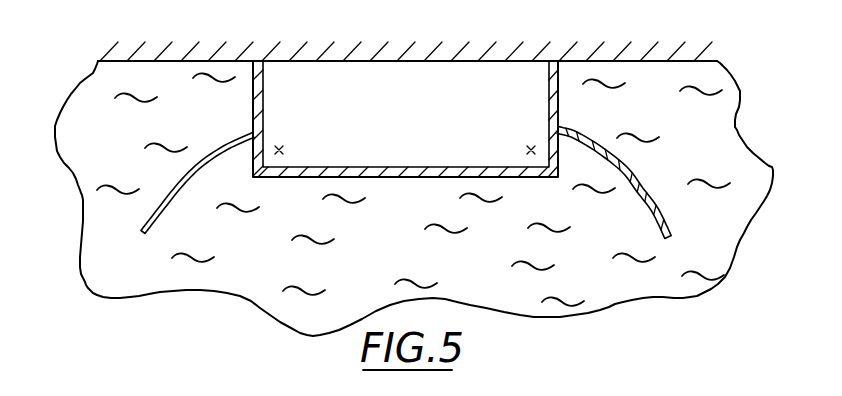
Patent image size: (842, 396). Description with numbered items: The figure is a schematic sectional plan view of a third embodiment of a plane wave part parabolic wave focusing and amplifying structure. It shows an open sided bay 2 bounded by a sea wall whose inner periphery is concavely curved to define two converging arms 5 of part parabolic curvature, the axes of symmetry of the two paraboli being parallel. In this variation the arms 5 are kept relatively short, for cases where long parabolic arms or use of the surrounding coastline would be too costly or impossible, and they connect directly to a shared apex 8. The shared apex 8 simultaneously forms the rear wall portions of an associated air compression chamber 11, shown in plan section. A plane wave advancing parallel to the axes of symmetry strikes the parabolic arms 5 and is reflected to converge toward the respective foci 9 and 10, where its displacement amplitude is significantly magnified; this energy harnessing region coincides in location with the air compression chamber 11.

The open sided bay 2 is at (382, 258).
The converging arms 5 is at (157, 246).
The shared apex 8 is at (265, 80).
The focus 9 is at (283, 150).
The focus 10 is at (528, 150).
The air compression chamber 11 is at (416, 158).